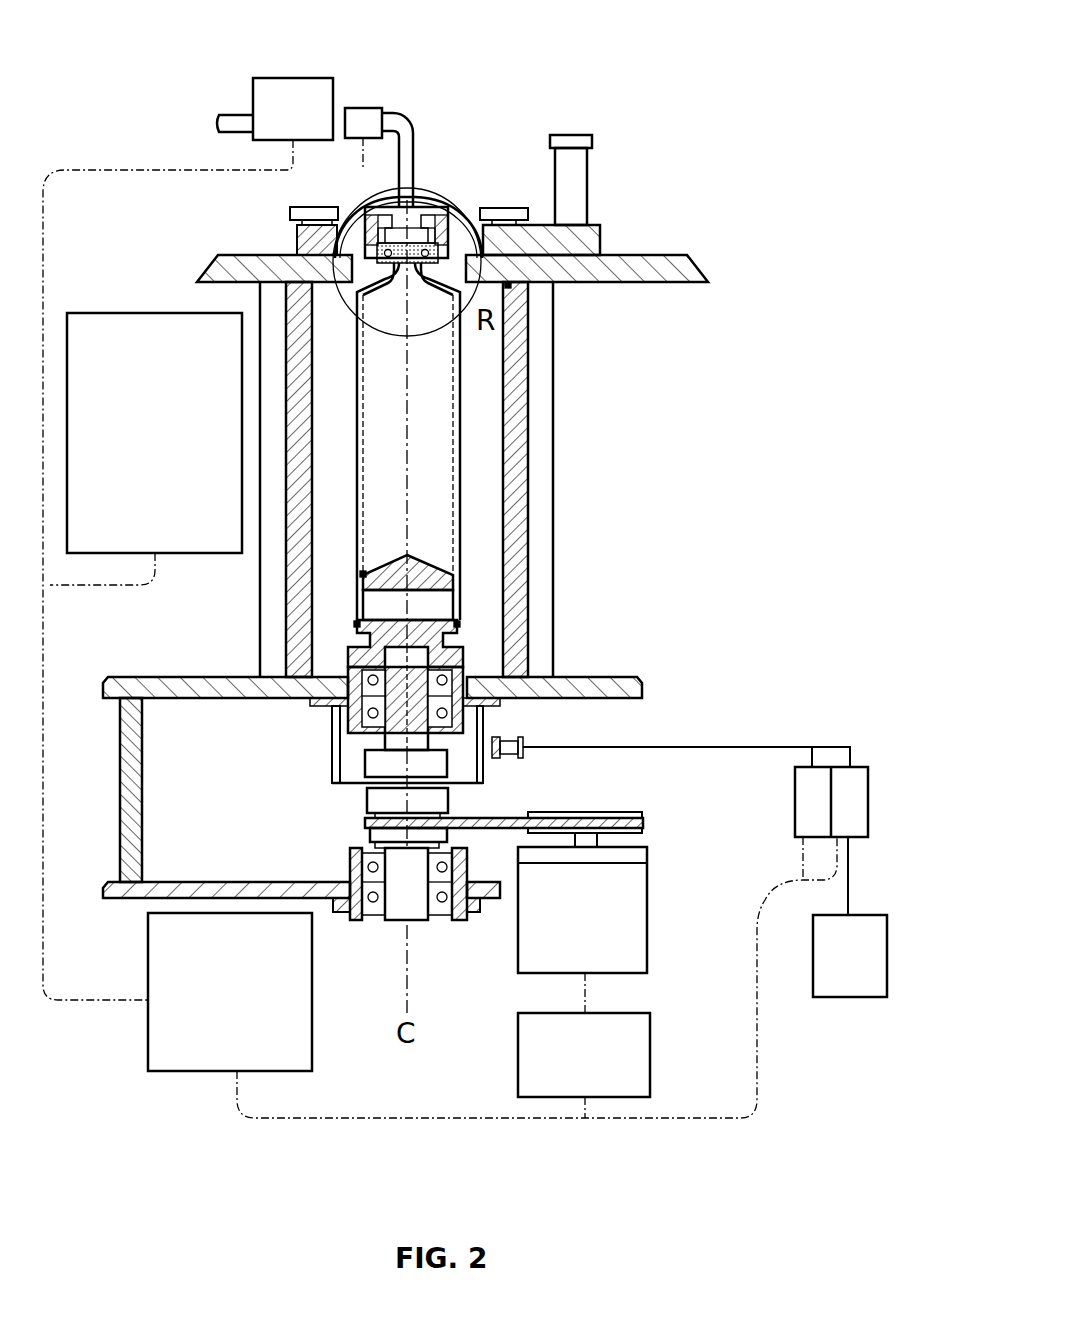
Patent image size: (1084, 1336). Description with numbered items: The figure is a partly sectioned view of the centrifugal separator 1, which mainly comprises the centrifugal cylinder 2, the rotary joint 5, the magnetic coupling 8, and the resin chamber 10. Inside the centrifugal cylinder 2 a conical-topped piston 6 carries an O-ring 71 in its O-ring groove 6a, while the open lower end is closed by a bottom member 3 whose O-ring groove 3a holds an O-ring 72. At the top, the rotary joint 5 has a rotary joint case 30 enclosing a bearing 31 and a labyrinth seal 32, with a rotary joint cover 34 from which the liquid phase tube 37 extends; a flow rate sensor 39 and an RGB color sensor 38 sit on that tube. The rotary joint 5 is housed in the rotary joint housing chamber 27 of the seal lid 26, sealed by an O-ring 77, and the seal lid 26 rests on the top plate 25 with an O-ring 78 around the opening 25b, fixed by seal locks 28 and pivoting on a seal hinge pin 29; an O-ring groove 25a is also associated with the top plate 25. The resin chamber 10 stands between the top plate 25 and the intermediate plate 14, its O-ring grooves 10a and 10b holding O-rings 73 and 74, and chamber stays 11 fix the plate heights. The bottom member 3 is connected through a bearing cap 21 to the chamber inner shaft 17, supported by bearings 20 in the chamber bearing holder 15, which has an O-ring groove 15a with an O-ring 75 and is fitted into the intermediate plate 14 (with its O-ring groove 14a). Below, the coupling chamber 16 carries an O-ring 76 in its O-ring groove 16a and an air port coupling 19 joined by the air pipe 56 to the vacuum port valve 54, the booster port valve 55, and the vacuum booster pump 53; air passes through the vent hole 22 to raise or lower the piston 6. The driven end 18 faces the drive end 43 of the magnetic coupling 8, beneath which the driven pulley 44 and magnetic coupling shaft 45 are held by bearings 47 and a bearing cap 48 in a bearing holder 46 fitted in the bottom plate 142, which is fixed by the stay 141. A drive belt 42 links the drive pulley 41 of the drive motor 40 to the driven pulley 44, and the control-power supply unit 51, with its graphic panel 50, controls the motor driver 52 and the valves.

The centrifugal separator 1 is at (738, 135).
The centrifugal cylinder 2 is at (460, 445).
The bottom member 3 is at (457, 645).
The O-ring groove 3a is at (457, 625).
The rotary joint 5 is at (427, 180).
The piston 6 is at (453, 575).
The O-ring groove 6a is at (358, 575).
The magnetic coupling 8 is at (250, 760).
The resin chamber 10 is at (515, 385).
The O-ring groove 10a is at (530, 300).
The O-ring groove 10b is at (528, 660).
The chamber stay 11 is at (553, 493).
The intermediate plate 14 is at (155, 676).
The O-ring groove 14a is at (282, 696).
The chamber bearing holder 15 is at (340, 672).
The O-ring groove 15a is at (535, 752).
The coupling chamber 16 is at (348, 718).
The O-ring groove 16a is at (500, 718).
The chamber inner shaft 17 is at (395, 740).
The magnetic coupling driven end 18 is at (365, 758).
The air port coupling 19 is at (483, 760).
The bearing 20 is at (368, 672).
The bearing cap 21 is at (450, 672).
The vent hole 22 is at (412, 737).
The top plate 25 is at (695, 268).
The O-ring groove 25a is at (318, 265).
The opening 25b is at (478, 252).
The seal lid 26 is at (600, 227).
The rotary joint housing chamber 27 is at (444, 205).
The seal lock 28 is at (303, 207).
The seal hinge pin 29 is at (575, 135).
The rotary joint case 30 is at (447, 215).
The bearing 31 is at (358, 290).
The labyrinth seal 32 is at (372, 215).
The rotary joint cover 34 is at (390, 243).
The liquid phase tube 37 is at (416, 155).
The RGB color sensor 38 is at (372, 108).
The flow rate sensor 39 is at (292, 78).
The drive motor 40 is at (647, 900).
The drive pulley 41 is at (622, 812).
The drive belt 42 is at (582, 818).
The magnetic coupling drive end 43 is at (367, 800).
The driven pulley 44 is at (370, 835).
The magnetic coupling shaft 45 is at (400, 903).
The bearing holder 46 is at (472, 917).
The bearing 47 is at (362, 898).
The bearing cap 48 is at (417, 923).
The graphic panel 50 is at (140, 313).
The control-power supply unit 51 is at (148, 1065).
The motor driver 52 is at (518, 1050).
The vacuum booster pump 53 is at (887, 970).
The vacuum port valve 54 is at (868, 808).
The booster port valve 55 is at (795, 805).
The air pipe 56 is at (755, 747).
The O-ring 71 is at (453, 592).
The O-ring 72 is at (357, 623).
The O-ring 73 is at (540, 282).
The O-ring 74 is at (300, 668).
The O-ring 75 is at (323, 702).
The O-ring 76 is at (500, 703).
The O-ring 77 is at (470, 245).
The O-ring 78 is at (300, 235).
The stay 141 is at (120, 765).
The bottom plate 142 is at (110, 882).